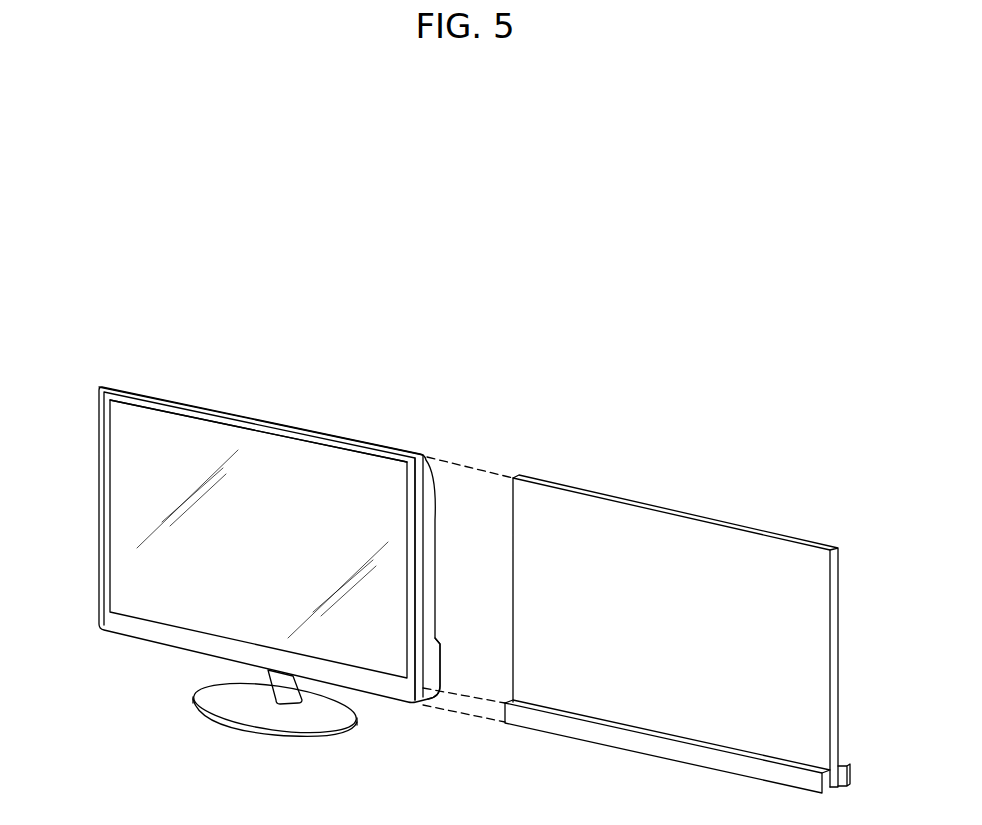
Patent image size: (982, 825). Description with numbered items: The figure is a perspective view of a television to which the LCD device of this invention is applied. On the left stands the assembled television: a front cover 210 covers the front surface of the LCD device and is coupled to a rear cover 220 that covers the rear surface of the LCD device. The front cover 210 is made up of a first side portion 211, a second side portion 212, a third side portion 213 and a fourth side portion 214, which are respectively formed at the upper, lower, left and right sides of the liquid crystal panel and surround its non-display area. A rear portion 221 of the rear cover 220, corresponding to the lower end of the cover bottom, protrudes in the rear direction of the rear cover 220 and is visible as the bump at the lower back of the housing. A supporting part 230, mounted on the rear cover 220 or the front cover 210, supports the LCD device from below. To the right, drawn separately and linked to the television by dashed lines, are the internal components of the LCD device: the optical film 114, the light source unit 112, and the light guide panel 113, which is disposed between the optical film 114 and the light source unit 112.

The front cover 210 is at (99, 549).
The first side portion 211 is at (103, 510).
The second side portion 212 is at (410, 598).
The third side portion 213 is at (290, 436).
The fourth side portion 214 is at (149, 636).
The rear cover 220 is at (205, 400).
The rear portion 221 is at (437, 663).
The supporting part 230 is at (263, 713).
The light source unit 112 is at (848, 772).
The light guide panel 113 is at (805, 615).
The optical film 114 is at (740, 767).